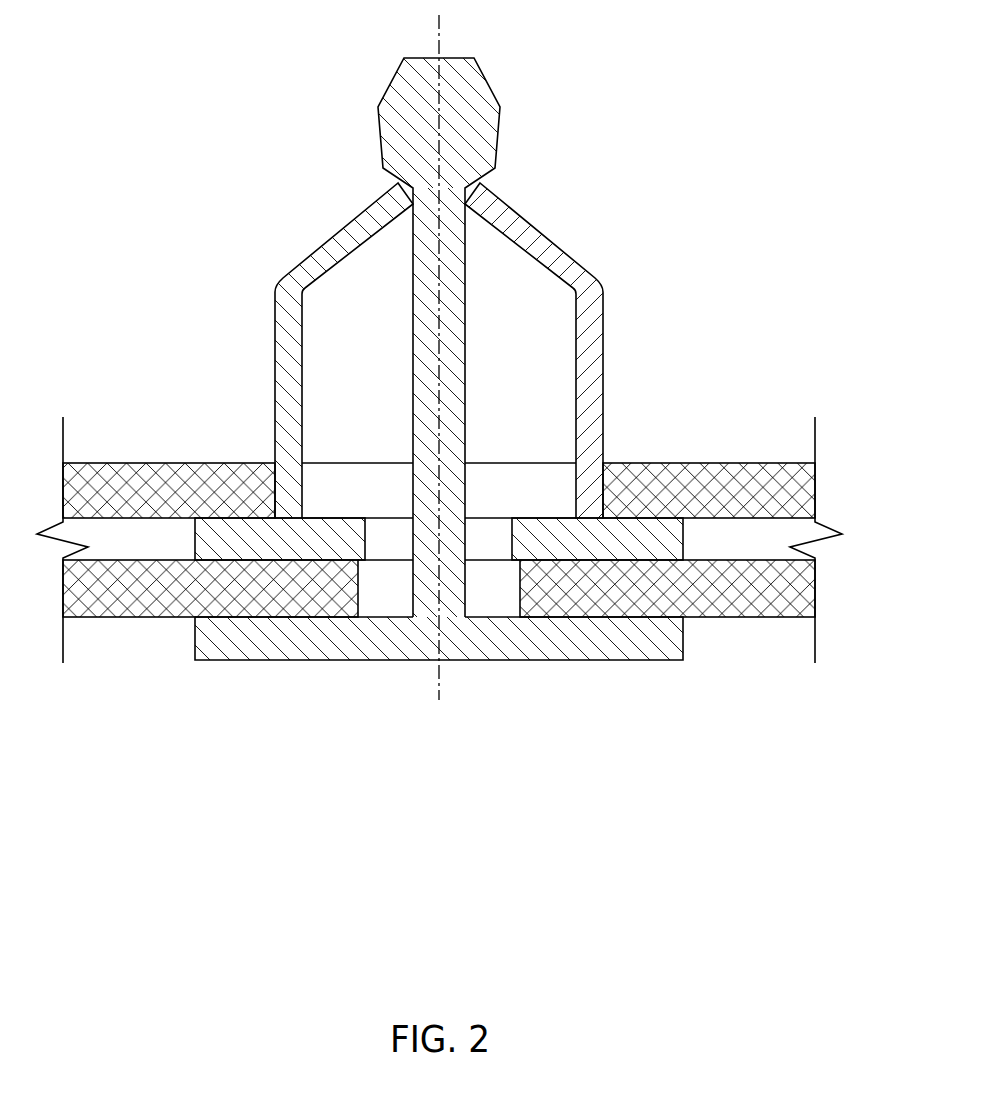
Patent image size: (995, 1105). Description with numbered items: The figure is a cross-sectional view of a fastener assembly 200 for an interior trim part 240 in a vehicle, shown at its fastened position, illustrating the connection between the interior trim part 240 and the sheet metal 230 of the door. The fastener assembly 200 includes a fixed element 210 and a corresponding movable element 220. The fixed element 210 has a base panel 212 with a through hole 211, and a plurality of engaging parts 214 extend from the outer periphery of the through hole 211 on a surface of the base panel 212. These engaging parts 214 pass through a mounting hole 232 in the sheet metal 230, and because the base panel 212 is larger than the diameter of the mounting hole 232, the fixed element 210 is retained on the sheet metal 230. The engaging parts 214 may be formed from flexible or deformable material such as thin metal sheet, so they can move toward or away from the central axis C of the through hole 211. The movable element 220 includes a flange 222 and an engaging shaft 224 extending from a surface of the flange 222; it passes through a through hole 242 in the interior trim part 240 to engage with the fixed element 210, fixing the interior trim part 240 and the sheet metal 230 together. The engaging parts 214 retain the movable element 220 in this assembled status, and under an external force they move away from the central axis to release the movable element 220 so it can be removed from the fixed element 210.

The fastener assembly 200 is at (465, 375).
The fixed element 210 is at (478, 350).
The through hole 211 is at (483, 543).
The base panel 212 is at (670, 540).
The engaging parts 214 is at (570, 264).
The movable element 220 is at (474, 385).
The flange 222 is at (670, 642).
The engaging shaft 224 is at (433, 327).
The sheet metal 230 is at (808, 484).
The mounting hole 232 is at (330, 478).
The interior trim part 240 is at (808, 580).
The through hole 242 is at (385, 588).